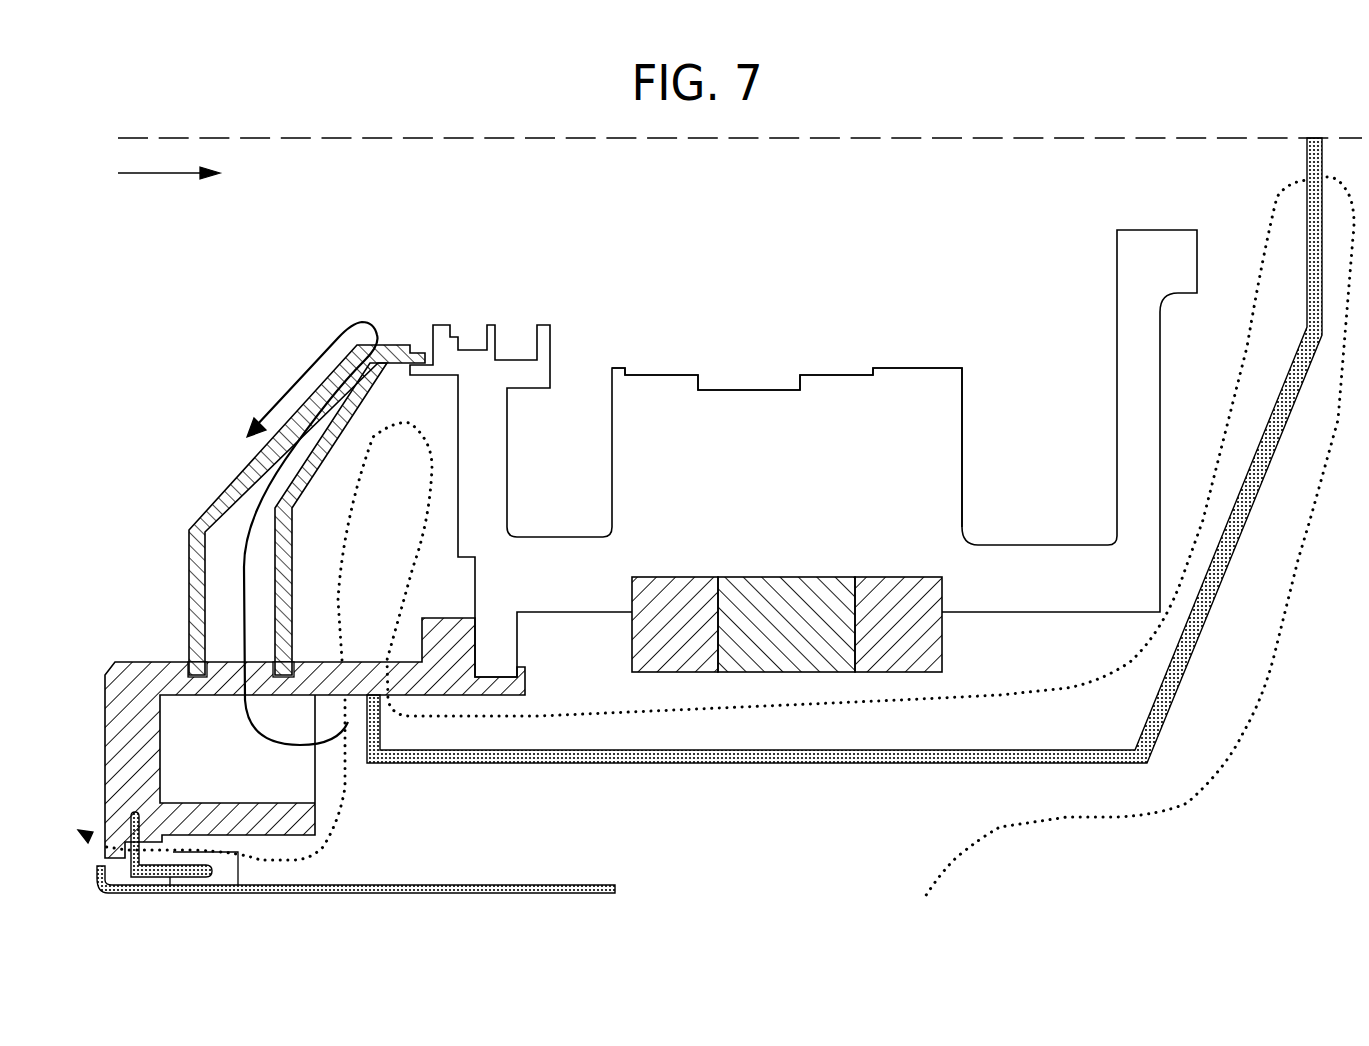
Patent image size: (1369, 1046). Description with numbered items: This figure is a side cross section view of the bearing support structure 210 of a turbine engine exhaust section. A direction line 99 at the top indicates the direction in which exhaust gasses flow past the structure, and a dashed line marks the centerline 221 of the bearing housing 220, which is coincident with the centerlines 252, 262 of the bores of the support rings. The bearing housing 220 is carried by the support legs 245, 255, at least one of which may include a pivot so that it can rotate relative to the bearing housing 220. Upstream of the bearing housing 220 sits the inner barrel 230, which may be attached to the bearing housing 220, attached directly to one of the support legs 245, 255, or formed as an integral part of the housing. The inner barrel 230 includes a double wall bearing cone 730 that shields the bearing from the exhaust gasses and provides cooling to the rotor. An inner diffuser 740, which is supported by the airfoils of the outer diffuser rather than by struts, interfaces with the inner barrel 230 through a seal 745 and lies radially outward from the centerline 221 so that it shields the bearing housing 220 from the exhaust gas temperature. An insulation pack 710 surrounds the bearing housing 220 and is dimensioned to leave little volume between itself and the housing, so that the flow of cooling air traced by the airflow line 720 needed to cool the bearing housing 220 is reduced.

The direction line 99 is at (168, 178).
The centerline 221 is at (740, 182).
The centerline 252 is at (740, 182).
The centerline 262 is at (933, 140).
The bearing support structure 210 is at (703, 320).
The bearing housing 220 is at (862, 385).
The support leg 245 is at (672, 600).
The support leg 255 is at (770, 600).
The inner barrel 230 is at (130, 738).
The double wall bearing cone 730 is at (205, 505).
The insulation pack 710 is at (807, 765).
The airflow line 720 is at (1113, 672).
The inner diffuser 740 is at (268, 886).
The seal 745 is at (136, 828).